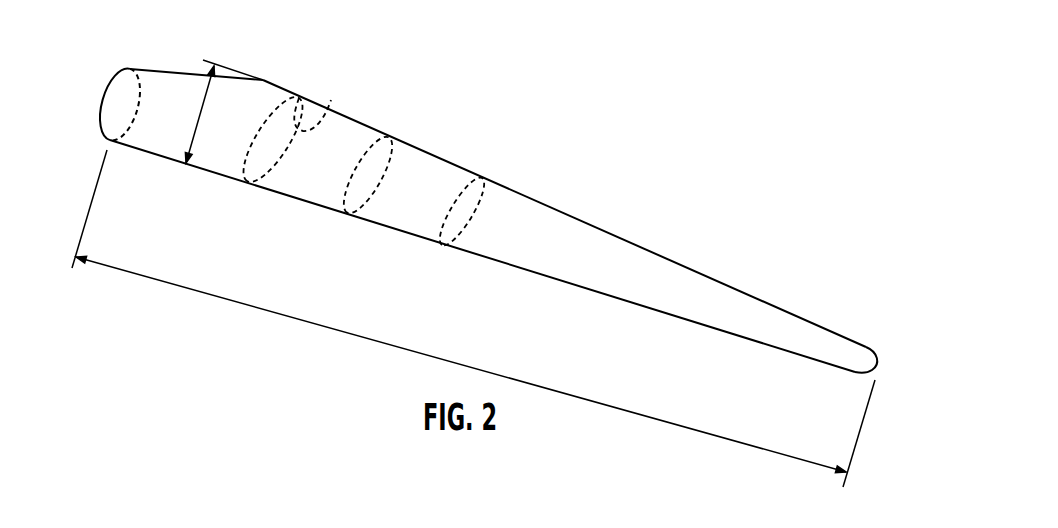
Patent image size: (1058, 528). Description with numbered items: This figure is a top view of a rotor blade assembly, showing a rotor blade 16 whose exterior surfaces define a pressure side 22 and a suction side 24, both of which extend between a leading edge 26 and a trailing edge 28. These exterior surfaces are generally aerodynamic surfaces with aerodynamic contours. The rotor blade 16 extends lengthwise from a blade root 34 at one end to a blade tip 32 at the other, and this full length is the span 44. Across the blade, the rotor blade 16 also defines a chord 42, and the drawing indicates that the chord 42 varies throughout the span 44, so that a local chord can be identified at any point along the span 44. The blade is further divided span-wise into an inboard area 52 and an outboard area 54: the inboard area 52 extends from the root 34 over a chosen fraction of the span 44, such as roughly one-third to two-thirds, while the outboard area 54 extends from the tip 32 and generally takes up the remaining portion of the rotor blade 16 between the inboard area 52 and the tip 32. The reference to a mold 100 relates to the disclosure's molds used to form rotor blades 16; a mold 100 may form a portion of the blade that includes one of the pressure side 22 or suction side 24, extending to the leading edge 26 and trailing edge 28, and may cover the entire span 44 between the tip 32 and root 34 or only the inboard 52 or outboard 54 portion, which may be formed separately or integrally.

The mold 100 is at (490, 260).
The rotor blade 16 is at (493, 203).
The pressure side 22 is at (331, 100).
The suction side 24 is at (268, 98).
The leading edge 26 is at (300, 200).
The trailing edge 28 is at (357, 121).
The blade tip 32 is at (878, 366).
The blade root 34 is at (107, 92).
The chord 42 is at (203, 108).
The span 44 is at (345, 333).
The inboard area 52 is at (413, 169).
The outboard area 54 is at (598, 246).